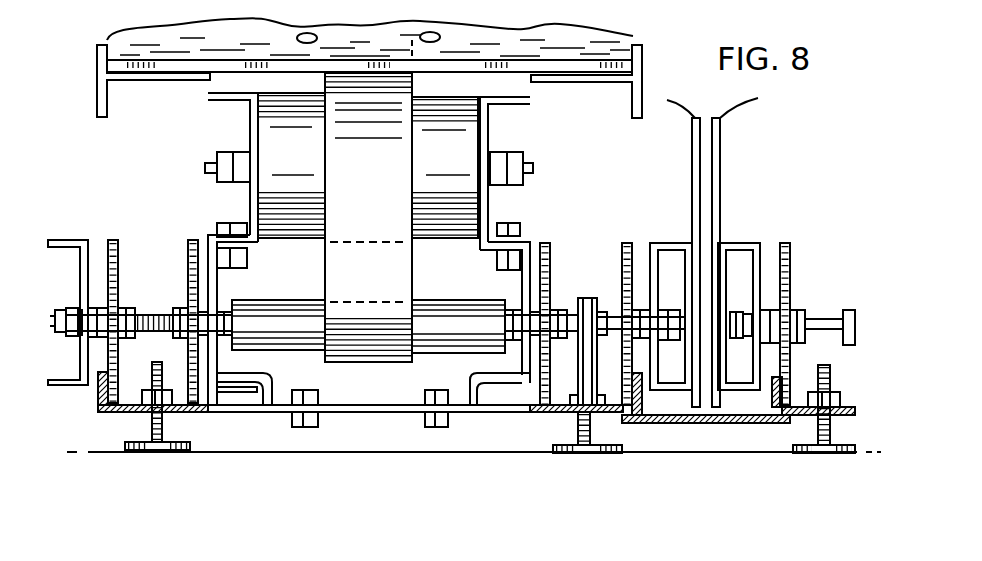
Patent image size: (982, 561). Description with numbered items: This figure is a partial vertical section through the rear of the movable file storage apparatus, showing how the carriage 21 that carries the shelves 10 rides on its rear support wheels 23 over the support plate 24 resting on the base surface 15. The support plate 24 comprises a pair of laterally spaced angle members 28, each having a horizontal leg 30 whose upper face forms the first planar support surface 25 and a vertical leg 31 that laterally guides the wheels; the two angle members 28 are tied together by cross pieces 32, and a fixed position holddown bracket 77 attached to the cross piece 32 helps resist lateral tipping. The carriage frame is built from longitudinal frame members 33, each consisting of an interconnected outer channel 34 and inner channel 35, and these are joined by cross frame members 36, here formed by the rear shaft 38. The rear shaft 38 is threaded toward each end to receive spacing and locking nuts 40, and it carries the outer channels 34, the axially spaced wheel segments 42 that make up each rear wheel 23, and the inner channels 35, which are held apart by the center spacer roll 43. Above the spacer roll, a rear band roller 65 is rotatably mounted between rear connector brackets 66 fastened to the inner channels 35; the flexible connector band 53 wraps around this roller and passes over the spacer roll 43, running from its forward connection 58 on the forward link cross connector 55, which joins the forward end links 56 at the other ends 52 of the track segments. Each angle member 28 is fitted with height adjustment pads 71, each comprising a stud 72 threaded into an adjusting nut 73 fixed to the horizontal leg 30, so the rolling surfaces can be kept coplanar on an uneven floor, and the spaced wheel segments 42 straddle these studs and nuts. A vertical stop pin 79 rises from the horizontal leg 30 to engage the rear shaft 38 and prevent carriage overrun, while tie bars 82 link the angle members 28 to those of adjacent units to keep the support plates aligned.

The shelves 10 is at (722, 172).
The base surface 15 is at (420, 450).
The carriage 21 is at (559, 204).
The rear support wheels 23 is at (100, 243).
The support plate 24 is at (640, 424).
The first planar support surface 25 is at (130, 412).
The angle members 28 is at (587, 377).
The horizontal leg 30 is at (200, 412).
The vertical leg 31 is at (100, 412).
The cross pieces 32 is at (385, 415).
The longitudinal frame members 33 is at (58, 240).
The outer channel 34 is at (88, 240).
The inner channel 35 is at (207, 240).
The cross frame members 36 is at (468, 302).
The rear shaft 38 is at (158, 312).
The spacing and locking nuts 40 is at (72, 313).
The wheel segments 42 is at (118, 258).
The center spacer roll 43 is at (292, 320).
The other ends of the track segments 52 is at (97, 58).
The flexible connector band 53 is at (380, 207).
The forward link cross connector 55 is at (400, 63).
The forward end links 56 is at (137, 62).
The forward connection 58 is at (363, 87).
The rear band roller 65 is at (287, 107).
The rear connector brackets 66 is at (248, 128).
The height adjustment pad 71 is at (173, 450).
The stud 72 is at (150, 378).
The adjusting nut 73 is at (175, 385).
The fixed position holddown bracket 77 is at (352, 412).
The vertical stop pin 79 is at (557, 415).
The tie bars 82 is at (740, 423).